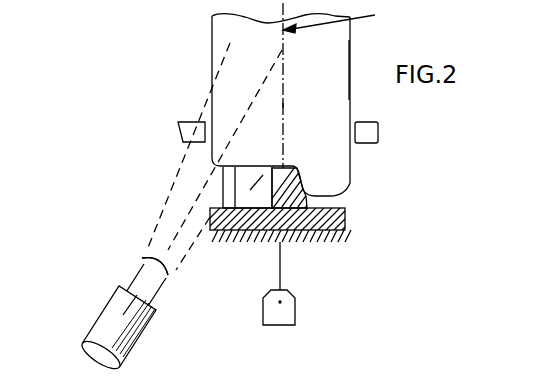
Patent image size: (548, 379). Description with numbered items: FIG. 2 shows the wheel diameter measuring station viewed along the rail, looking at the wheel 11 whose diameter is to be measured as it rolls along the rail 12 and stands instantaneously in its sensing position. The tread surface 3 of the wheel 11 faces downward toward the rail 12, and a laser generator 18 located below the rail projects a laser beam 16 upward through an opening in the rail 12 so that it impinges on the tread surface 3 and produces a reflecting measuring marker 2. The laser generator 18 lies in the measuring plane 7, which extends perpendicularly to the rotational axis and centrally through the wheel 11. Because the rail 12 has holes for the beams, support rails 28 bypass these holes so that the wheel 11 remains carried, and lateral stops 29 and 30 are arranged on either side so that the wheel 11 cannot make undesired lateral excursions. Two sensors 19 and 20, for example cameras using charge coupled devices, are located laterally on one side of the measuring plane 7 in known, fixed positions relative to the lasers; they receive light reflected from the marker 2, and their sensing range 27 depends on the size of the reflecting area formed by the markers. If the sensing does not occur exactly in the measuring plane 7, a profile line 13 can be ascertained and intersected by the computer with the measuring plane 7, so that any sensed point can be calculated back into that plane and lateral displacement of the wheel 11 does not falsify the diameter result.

The measuring marker 2 is at (285, 104).
The tread surface 3 is at (212, 25).
The measuring plane 7 is at (336, 18).
The wheel 11 is at (349, 52).
The rail 12 is at (287, 193).
The profile line 13 is at (259, 164).
The laser beam 16 is at (281, 265).
The laser generator 18 is at (287, 314).
The sensor 19 is at (145, 286).
The sensor 20 is at (97, 316).
The sensing range 27 is at (153, 254).
The support rails 28 is at (227, 169).
The lateral stop 29 is at (192, 119).
The lateral stop 30 is at (378, 130).